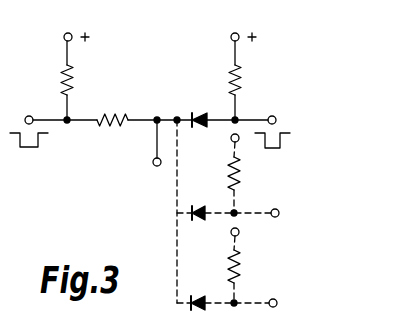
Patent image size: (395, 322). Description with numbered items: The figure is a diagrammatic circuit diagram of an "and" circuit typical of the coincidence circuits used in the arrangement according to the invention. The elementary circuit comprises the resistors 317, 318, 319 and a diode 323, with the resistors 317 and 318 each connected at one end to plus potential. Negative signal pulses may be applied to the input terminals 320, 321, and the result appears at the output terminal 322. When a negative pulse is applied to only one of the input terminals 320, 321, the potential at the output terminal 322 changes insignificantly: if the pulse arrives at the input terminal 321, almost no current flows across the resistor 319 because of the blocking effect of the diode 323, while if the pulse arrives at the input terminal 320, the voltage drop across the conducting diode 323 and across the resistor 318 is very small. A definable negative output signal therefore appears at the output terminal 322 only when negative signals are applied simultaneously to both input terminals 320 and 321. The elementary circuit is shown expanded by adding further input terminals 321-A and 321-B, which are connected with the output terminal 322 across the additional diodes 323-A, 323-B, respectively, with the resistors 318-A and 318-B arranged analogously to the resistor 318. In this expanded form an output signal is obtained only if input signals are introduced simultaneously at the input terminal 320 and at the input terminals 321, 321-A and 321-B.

The resistor 317 is at (72, 82).
The resistor 318 is at (242, 83).
The resistor 319 is at (112, 117).
The input terminal 320 is at (24, 114).
The input terminal 321 is at (277, 118).
The output terminal 322 is at (152, 162).
The diode 323 is at (193, 112).
The resistor 318-A is at (232, 185).
The input terminal 321-A is at (279, 212).
The diode 323-A is at (202, 208).
The resistor 318-B is at (234, 273).
The input terminal 321-B is at (277, 302).
The diode 323-B is at (197, 295).